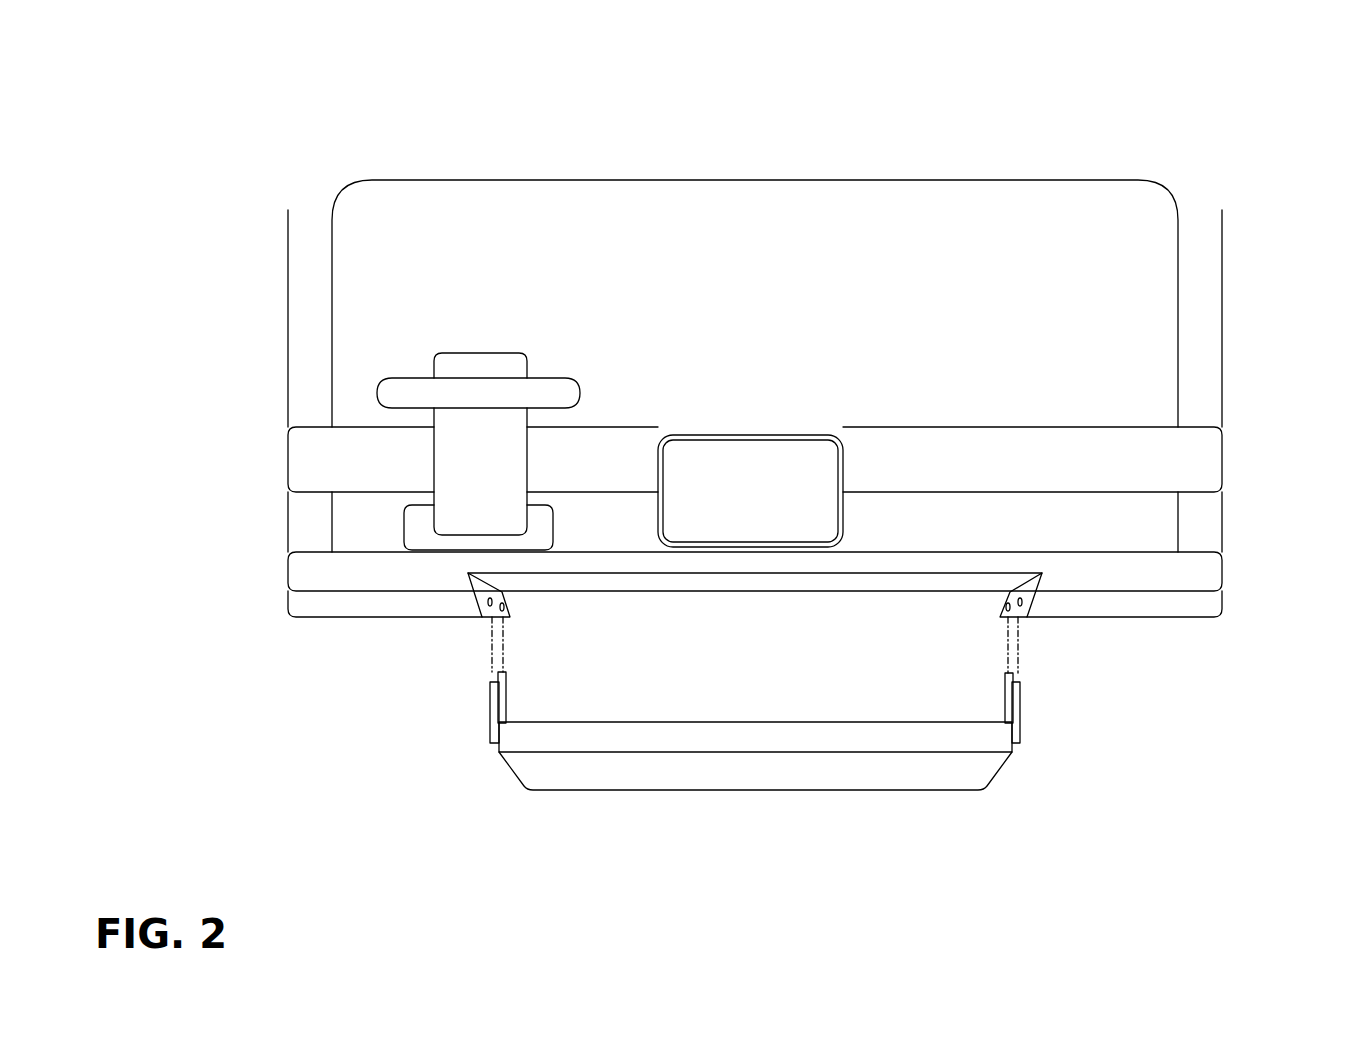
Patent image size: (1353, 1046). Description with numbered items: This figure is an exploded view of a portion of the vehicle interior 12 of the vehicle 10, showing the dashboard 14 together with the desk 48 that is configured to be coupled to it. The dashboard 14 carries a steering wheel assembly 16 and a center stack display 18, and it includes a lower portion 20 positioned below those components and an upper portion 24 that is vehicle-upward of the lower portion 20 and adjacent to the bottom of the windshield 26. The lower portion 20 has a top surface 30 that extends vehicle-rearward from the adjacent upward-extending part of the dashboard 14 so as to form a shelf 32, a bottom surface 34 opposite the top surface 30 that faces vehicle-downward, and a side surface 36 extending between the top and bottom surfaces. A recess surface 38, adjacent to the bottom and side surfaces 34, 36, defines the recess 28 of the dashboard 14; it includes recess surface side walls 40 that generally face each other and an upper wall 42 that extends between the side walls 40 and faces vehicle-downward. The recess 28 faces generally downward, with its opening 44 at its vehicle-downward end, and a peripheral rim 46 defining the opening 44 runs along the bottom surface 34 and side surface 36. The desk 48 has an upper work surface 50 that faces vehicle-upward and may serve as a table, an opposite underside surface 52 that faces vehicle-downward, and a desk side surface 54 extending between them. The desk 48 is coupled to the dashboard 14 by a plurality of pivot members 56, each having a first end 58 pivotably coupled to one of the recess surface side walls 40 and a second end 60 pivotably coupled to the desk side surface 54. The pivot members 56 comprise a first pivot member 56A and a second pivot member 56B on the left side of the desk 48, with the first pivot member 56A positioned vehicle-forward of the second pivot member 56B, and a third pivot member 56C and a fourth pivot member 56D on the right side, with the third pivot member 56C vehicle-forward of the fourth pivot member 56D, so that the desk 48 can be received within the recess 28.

The vehicle 10 is at (997, 118).
The vehicle interior 12 is at (527, 250).
The dashboard 14 is at (797, 392).
The steering wheel assembly 16 is at (415, 388).
The center stack display 18 is at (748, 509).
The lower portion 20 is at (1112, 577).
The upper portion 24 is at (1172, 462).
The windshield 26 is at (853, 248).
The recess 28 is at (535, 602).
The top surface 30 is at (1100, 552).
The shelf 32 is at (362, 548).
The bottom surface 34 is at (1133, 620).
The side surface 36 is at (398, 598).
The recess surface 38 is at (998, 635).
The recess surface side walls 40 is at (485, 594).
The upper wall 42 is at (593, 580).
The opening 44 is at (755, 793).
The peripheral rim 46 is at (1010, 627).
The desk 48 is at (652, 775).
The upper work surface 50 is at (790, 722).
The underside surface 52 is at (945, 790).
The desk side surface 54 is at (750, 742).
The pivot members 56 is at (753, 741).
The first pivot member 56A is at (507, 695).
The second pivot member 56B is at (490, 712).
The third pivot member 56C is at (1005, 700).
The fourth pivot member 56D is at (1020, 730).
The first end 58 is at (490, 683).
The second end 60 is at (490, 747).